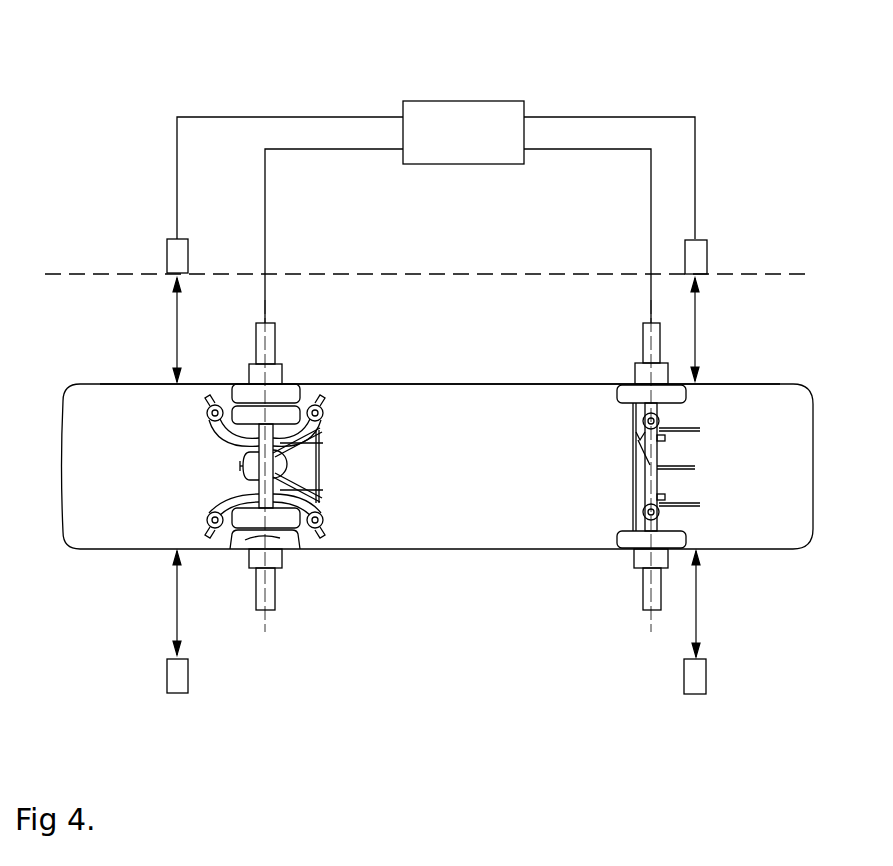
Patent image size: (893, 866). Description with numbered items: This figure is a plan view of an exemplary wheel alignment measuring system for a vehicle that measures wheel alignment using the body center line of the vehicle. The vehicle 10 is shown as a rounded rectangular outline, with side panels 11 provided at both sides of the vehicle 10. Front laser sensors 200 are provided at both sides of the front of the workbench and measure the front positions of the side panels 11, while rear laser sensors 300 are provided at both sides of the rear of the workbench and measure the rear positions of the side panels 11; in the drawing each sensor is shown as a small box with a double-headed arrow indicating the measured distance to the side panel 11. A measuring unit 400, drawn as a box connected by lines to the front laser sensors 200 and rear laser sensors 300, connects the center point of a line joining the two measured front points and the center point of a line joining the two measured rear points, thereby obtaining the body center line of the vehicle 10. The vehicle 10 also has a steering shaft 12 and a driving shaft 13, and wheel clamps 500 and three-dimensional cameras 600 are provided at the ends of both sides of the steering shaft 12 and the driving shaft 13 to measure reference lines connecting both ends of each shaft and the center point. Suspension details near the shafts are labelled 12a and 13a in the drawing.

The vehicle 10 is at (478, 535).
The side panel 11 is at (495, 383).
The steering shaft 12 is at (640, 512).
The front suspension arm 12a is at (656, 478).
The driving shaft 13 is at (233, 545).
The rear suspension link 13a is at (296, 545).
The front laser sensor 200 is at (702, 253).
The rear laser sensor 300 is at (167, 257).
The measuring unit 400 is at (462, 100).
The wheel clamp 500 is at (275, 375).
The 3D camera 600 is at (270, 337).